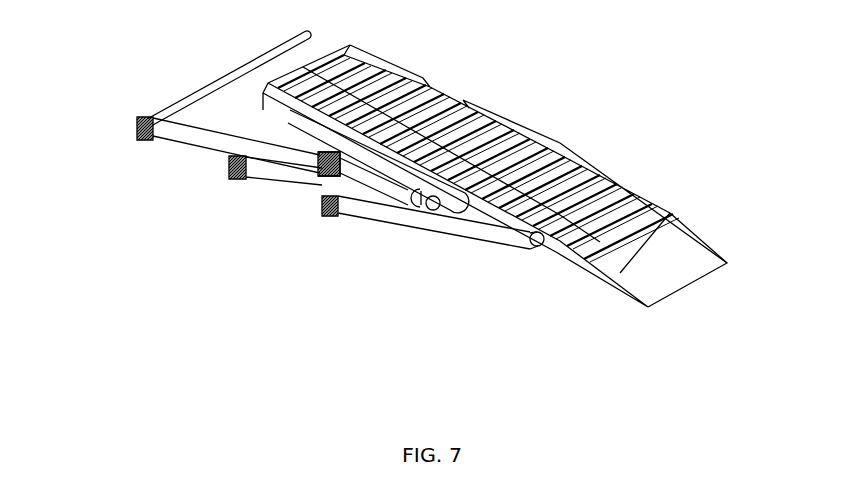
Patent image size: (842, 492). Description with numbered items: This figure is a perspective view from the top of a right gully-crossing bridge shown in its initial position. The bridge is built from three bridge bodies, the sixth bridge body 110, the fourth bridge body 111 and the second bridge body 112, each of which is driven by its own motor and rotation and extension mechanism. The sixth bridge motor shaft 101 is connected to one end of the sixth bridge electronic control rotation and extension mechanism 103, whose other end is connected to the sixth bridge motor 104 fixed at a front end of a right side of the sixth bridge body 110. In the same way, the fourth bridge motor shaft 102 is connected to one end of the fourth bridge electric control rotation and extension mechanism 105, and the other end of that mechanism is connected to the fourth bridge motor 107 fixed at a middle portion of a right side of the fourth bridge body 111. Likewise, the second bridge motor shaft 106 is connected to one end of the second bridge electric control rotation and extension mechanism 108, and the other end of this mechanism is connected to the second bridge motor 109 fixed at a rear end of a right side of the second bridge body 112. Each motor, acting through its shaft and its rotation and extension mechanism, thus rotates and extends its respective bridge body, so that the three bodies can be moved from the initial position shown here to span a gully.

The sixth bridge motor shaft 101 is at (328, 165).
The fourth bridge motor shaft 102 is at (322, 152).
The sixth bridge electronic control rotation and extension mechanism 103 is at (140, 129).
The sixth bridge motor 104 is at (233, 167).
The fourth bridge electric control rotation and extension mechanism 105 is at (335, 160).
The second bridge motor shaft 106 is at (400, 175).
The fourth bridge motor 107 is at (431, 211).
The second bridge electric control rotation and extension mechanism 108 is at (452, 228).
The second bridge motor 109 is at (531, 250).
The sixth bridge body 110 is at (423, 80).
The fourth bridge body 111 is at (545, 135).
The second bridge body 112 is at (632, 257).